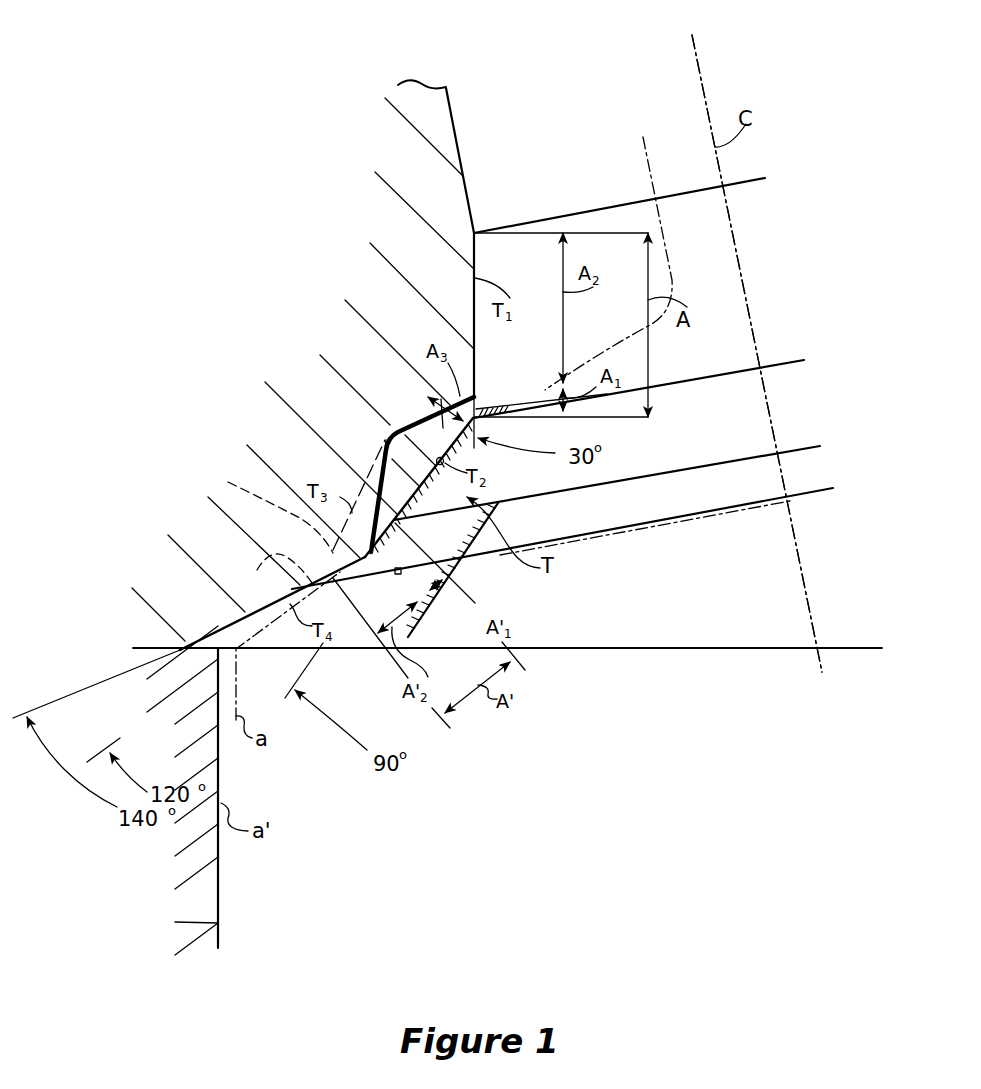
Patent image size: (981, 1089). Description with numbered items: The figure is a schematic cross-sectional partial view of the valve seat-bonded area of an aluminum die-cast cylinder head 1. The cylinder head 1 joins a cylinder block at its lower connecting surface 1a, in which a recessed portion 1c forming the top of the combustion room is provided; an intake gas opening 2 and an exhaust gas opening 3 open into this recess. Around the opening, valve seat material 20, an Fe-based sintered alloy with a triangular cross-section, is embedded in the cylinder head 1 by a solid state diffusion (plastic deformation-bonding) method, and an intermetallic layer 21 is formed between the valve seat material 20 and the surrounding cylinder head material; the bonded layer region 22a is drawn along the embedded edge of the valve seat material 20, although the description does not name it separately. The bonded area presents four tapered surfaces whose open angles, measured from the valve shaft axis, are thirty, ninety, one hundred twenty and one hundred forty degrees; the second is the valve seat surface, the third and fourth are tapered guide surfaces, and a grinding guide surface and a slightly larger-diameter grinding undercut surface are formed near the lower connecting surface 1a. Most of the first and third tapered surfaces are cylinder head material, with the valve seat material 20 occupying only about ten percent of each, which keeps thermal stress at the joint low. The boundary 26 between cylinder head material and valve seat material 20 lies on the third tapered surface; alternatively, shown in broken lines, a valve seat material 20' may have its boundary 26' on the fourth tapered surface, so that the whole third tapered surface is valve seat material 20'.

The cylinder head 1 is at (454, 102).
The cylinder head lower connecting surface 1a is at (138, 652).
The recessed portion 1c is at (632, 632).
The intake gas opening 2 is at (760, 588).
The exhaust gas opening 3 is at (775, 353).
The valve seat material 20 is at (562, 506).
The valve seat material 20' is at (280, 496).
The intermetallic layer 21 is at (378, 456).
The coated rake face 22a is at (400, 421).
The boundary 26 is at (562, 587).
The boundary 26' is at (273, 573).